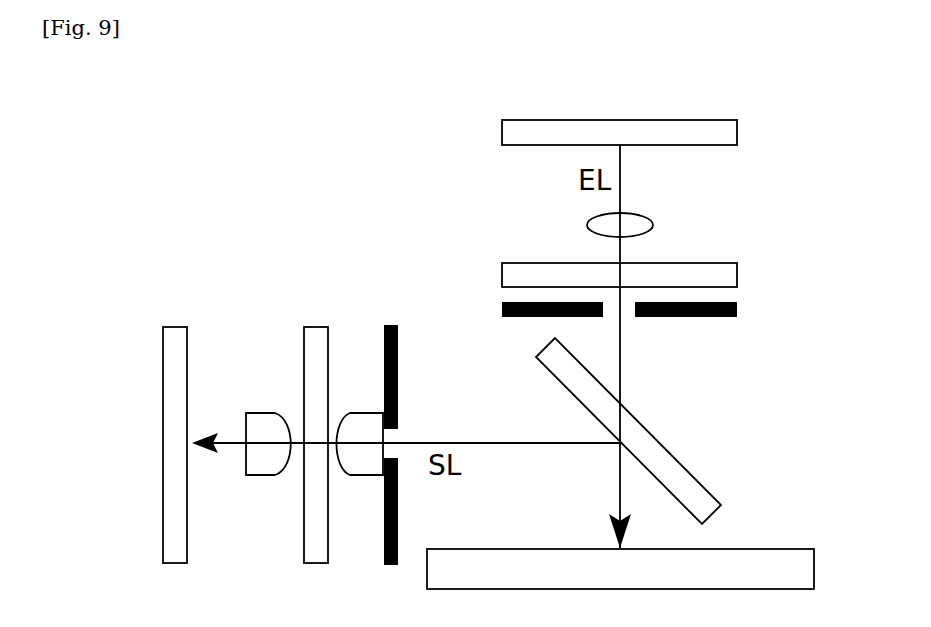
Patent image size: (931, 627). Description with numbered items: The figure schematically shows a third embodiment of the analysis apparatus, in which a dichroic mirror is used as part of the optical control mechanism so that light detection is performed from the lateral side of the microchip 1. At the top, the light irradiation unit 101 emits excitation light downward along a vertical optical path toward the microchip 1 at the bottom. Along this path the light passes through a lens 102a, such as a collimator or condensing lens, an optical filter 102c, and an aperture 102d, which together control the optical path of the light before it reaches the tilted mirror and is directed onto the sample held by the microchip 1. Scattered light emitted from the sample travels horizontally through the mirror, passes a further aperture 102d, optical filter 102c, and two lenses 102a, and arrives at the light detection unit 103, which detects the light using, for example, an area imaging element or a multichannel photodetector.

The light irradiation unit 101 is at (707, 128).
The lens 102a is at (640, 226).
The optical filter 102c is at (725, 268).
The aperture 102d is at (728, 305).
The light detection unit 103 is at (168, 507).
The microchip 1 is at (763, 560).